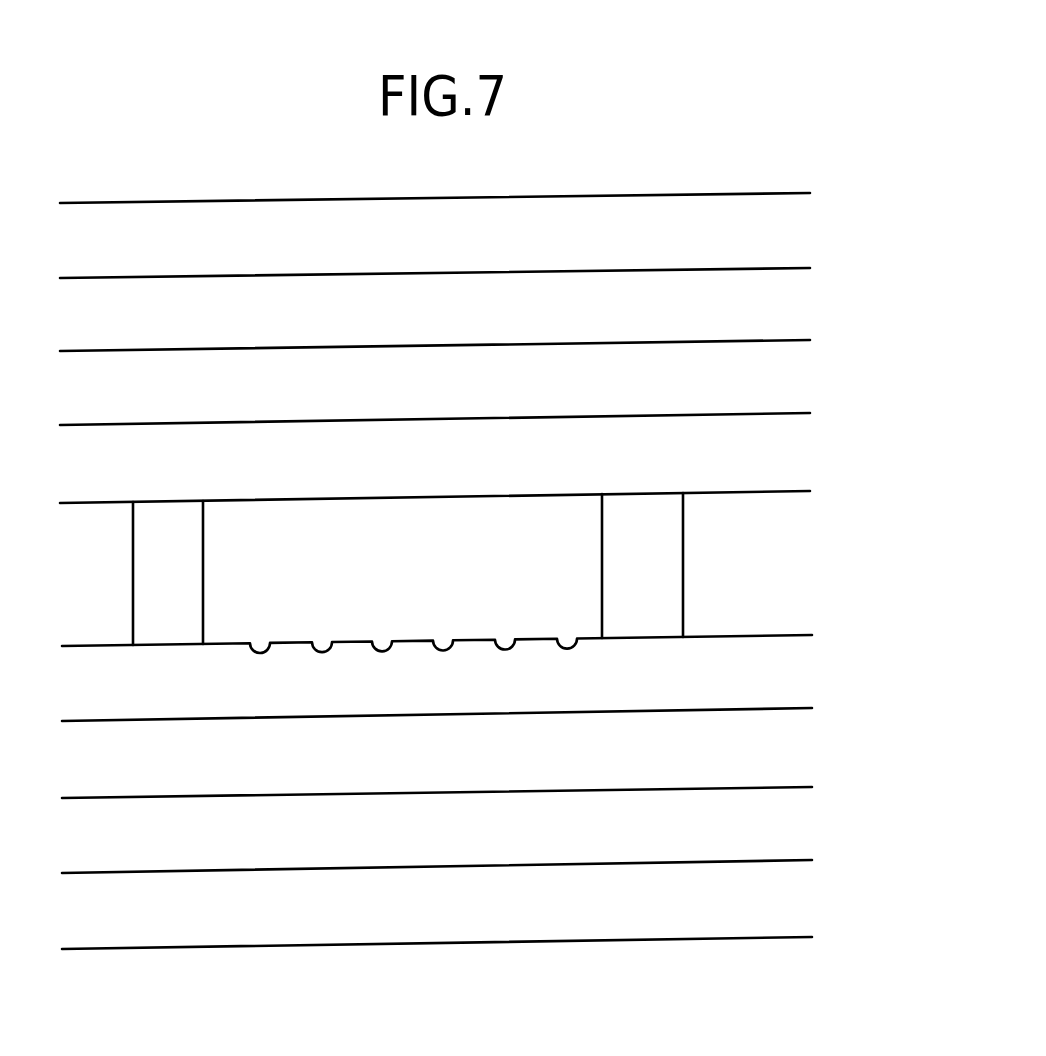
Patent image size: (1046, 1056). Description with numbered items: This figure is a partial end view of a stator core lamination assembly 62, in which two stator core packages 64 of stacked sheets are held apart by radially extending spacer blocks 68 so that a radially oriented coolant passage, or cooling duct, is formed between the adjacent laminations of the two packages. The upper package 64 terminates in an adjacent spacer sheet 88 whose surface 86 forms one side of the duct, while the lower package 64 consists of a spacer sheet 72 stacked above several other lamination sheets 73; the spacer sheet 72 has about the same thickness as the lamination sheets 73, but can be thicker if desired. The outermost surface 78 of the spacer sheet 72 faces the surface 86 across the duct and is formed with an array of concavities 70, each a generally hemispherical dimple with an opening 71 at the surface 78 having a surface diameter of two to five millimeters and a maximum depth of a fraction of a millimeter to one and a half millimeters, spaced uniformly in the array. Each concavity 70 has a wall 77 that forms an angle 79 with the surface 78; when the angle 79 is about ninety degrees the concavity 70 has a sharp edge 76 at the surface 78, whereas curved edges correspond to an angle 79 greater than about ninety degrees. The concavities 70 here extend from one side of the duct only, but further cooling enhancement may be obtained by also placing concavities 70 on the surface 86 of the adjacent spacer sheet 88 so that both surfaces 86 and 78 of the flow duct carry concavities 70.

The stator core lamination assembly 62 is at (822, 168).
The stator core package 64 is at (823, 191).
The spacer block 68 is at (150, 563).
The concavity 70 is at (381, 636).
The opening 71 is at (388, 637).
The spacer sheet 72 is at (657, 690).
The lamination sheet 73 is at (657, 765).
The sharp edge 76 is at (254, 636).
The wall 77 is at (250, 648).
The outermost surface 78 is at (222, 637).
The angle 79 is at (397, 650).
The surface 86 is at (353, 497).
The adjacent spacer sheet 88 is at (558, 473).